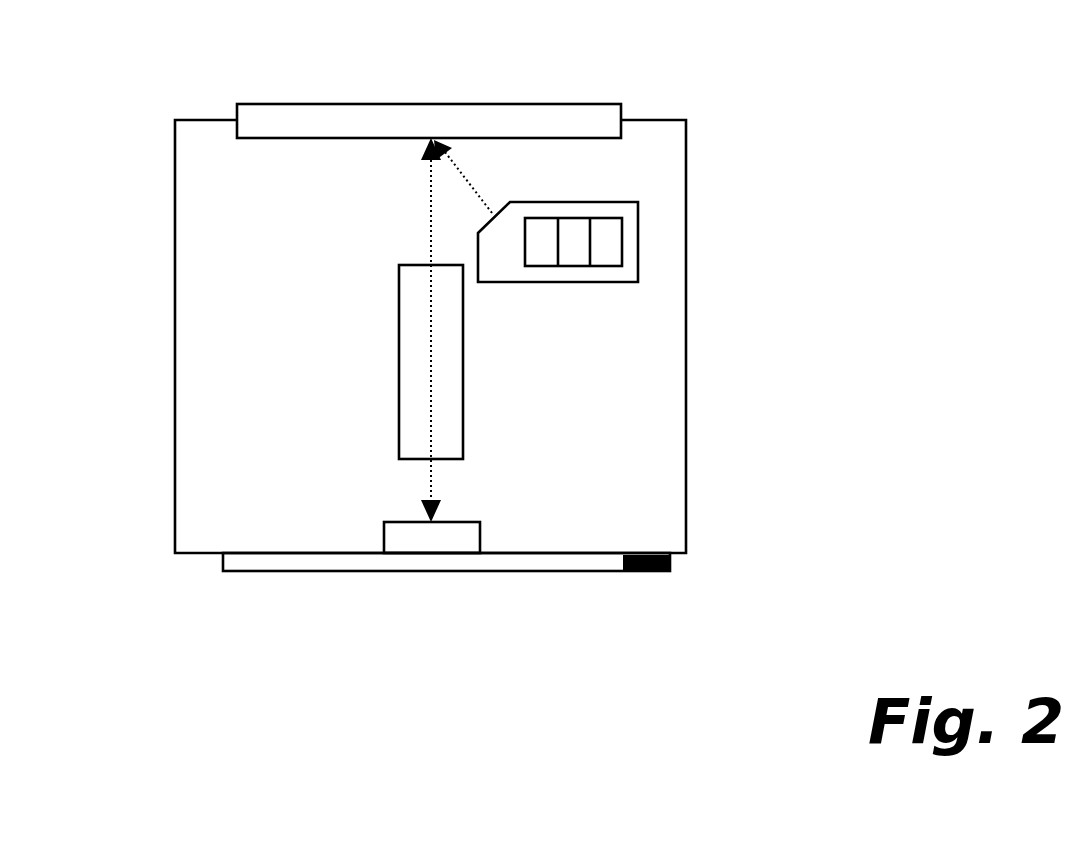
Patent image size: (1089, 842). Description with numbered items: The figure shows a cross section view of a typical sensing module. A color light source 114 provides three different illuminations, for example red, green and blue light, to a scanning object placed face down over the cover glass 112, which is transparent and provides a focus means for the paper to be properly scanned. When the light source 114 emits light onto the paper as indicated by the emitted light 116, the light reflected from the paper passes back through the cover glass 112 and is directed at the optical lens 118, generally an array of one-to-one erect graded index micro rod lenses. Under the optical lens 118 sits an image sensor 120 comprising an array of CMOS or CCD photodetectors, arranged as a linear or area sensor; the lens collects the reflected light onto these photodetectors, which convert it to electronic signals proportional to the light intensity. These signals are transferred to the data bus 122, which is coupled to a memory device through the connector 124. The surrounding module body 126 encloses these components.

The cover glass 112 is at (256, 118).
The color light source 114 is at (632, 238).
The emitted light 116 is at (468, 178).
The optical lens 118 is at (410, 280).
The image sensor 120 is at (422, 543).
The data bus 122 is at (247, 562).
The connector 124 is at (636, 575).
The housing 126 is at (662, 345).